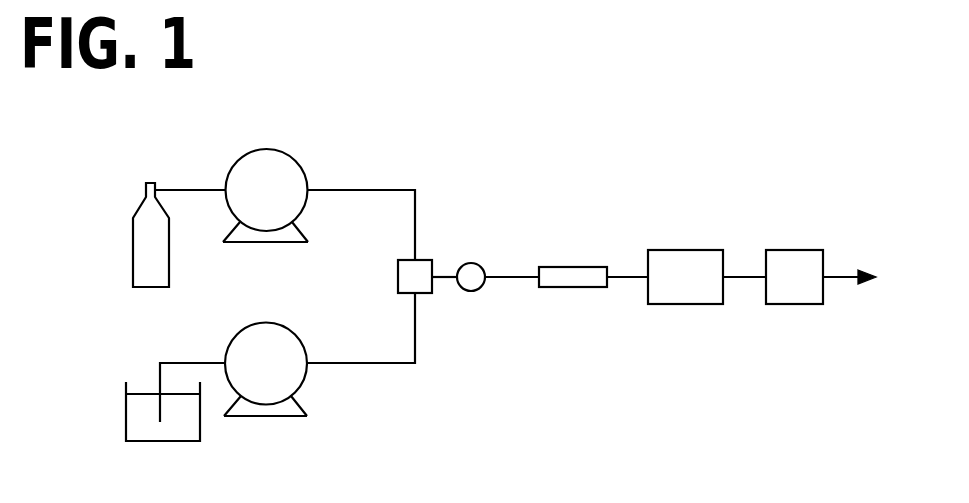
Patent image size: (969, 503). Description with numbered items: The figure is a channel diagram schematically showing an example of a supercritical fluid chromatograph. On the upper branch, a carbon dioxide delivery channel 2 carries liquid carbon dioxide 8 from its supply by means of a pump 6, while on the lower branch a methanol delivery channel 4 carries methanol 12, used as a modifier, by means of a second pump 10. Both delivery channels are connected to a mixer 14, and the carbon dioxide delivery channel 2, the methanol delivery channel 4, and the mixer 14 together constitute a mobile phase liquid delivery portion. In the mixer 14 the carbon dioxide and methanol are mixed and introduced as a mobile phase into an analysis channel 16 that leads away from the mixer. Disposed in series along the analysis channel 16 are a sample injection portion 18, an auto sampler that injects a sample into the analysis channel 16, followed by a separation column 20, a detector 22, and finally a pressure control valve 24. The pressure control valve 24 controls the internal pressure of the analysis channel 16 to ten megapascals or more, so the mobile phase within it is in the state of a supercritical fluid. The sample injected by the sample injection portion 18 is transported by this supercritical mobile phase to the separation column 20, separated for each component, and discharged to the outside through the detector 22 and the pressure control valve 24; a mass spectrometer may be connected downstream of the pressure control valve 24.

The carbon dioxide delivery channel 2 is at (335, 186).
The methanol delivery channel 4 is at (332, 366).
The pump 6 is at (289, 152).
The carbon dioxide 8 is at (143, 250).
The pump 10 is at (285, 322).
The methanol 12 is at (133, 420).
The mixer 14 is at (432, 258).
The analysis channel 16 is at (625, 280).
The sample injection portion 18 is at (478, 262).
The separation column 20 is at (583, 265).
The detector 22 is at (695, 248).
The pressure control valve 24 is at (797, 248).